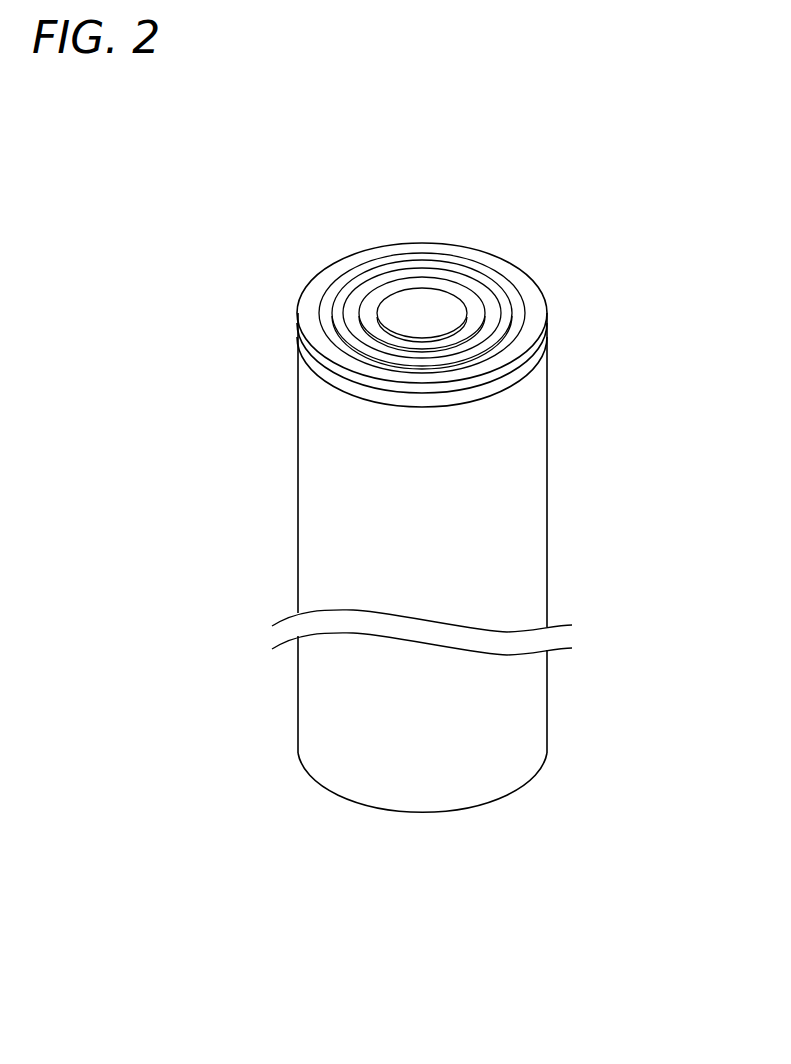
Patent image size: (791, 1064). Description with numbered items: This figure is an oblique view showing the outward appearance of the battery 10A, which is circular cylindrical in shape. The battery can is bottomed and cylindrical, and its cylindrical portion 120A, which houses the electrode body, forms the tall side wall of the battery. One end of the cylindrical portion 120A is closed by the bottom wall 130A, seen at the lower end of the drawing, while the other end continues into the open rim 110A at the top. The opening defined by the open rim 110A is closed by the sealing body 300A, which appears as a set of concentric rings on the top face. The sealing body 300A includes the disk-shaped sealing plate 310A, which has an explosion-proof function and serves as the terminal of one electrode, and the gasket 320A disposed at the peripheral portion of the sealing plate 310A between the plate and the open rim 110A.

The battery 10A is at (588, 139).
The open rim 110A is at (540, 326).
The cylindrical portion 120A is at (527, 549).
The bottom wall 130A is at (428, 793).
The sealing body 300A is at (368, 311).
The sealing plate 310A is at (430, 298).
The gasket 320A is at (493, 281).